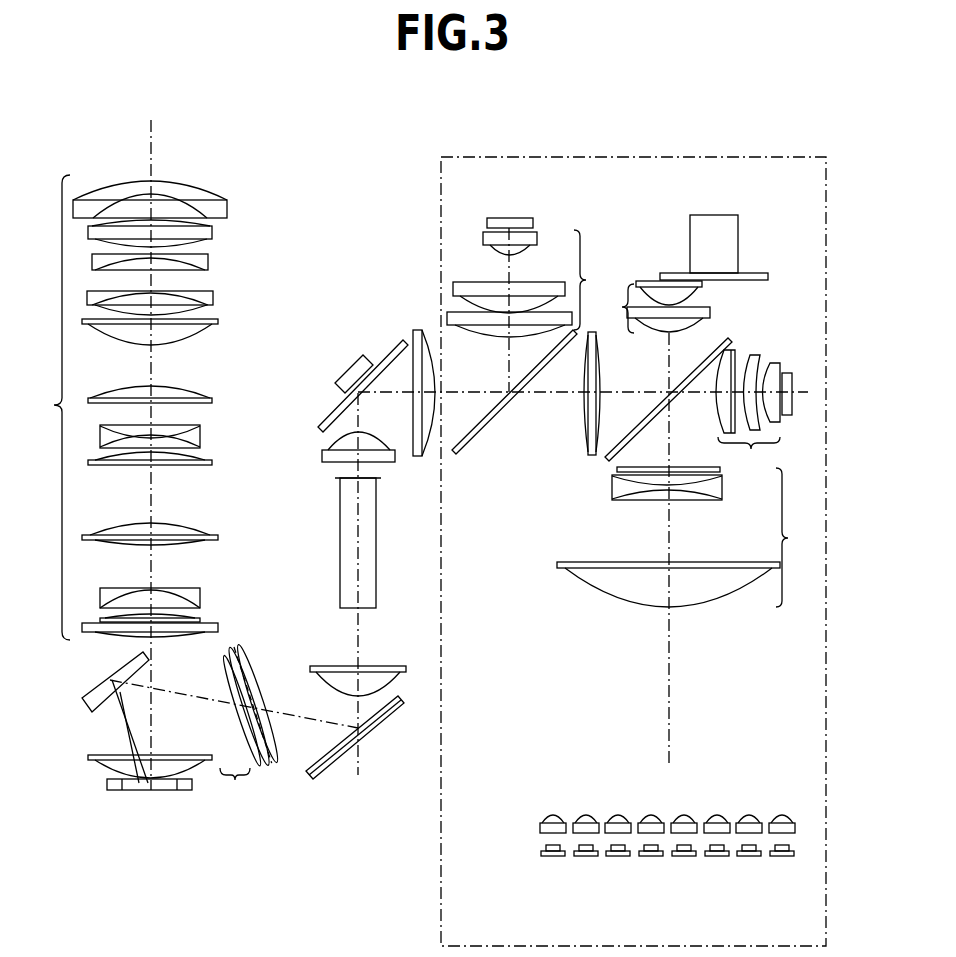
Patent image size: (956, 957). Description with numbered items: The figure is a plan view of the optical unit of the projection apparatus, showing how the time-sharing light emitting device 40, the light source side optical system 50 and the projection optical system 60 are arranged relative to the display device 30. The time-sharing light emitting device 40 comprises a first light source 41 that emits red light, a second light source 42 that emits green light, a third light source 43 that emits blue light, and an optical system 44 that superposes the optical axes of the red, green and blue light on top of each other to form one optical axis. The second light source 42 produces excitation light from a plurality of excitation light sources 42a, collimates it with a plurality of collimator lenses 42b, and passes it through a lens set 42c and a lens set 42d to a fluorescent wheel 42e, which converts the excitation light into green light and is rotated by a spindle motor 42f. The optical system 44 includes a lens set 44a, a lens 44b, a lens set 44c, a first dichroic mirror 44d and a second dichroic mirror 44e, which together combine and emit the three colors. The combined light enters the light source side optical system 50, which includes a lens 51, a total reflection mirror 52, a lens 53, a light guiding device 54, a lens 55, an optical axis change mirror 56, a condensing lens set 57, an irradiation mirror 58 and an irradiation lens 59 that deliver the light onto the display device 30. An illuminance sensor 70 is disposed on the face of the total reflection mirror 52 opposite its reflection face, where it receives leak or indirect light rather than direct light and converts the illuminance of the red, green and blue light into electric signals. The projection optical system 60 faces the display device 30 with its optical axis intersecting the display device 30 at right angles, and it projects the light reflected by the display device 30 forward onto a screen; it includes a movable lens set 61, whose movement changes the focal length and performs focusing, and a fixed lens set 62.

The display device 30 is at (138, 790).
The time-sharing light emitting device 40 is at (668, 156).
The first light source 41 is at (515, 218).
The second light source 42 is at (522, 717).
The excitation light sources 42a is at (651, 857).
The collimator lenses 42b is at (651, 814).
The lens set 42c is at (788, 538).
The lens set 42d is at (621, 307).
The fluorescent wheel 42e is at (681, 273).
The spindle motor 42f is at (718, 215).
The third light source 43 is at (790, 372).
The optical system 44 is at (519, 474).
The lens set 44a is at (751, 449).
The lens 44b is at (592, 458).
The lens set 44c is at (586, 280).
The first dichroic mirror 44d is at (728, 338).
The second dichroic mirror 44e is at (502, 413).
The light source side optical system 50 is at (295, 800).
The lens 51 is at (415, 330).
The total reflection mirror 52 is at (335, 410).
The lens 53 is at (322, 456).
The light guiding device 54 is at (378, 546).
The lens 55 is at (388, 666).
The optical axis change mirror 56 is at (378, 733).
The condensing lens set 57 is at (249, 727).
The irradiation mirror 58 is at (85, 696).
The irradiation lens 59 is at (105, 765).
The projection optical system 60 is at (86, 455).
The movable lens set 61 is at (240, 285).
The fixed lens set 62 is at (243, 568).
The illuminance sensor 70 is at (352, 364).